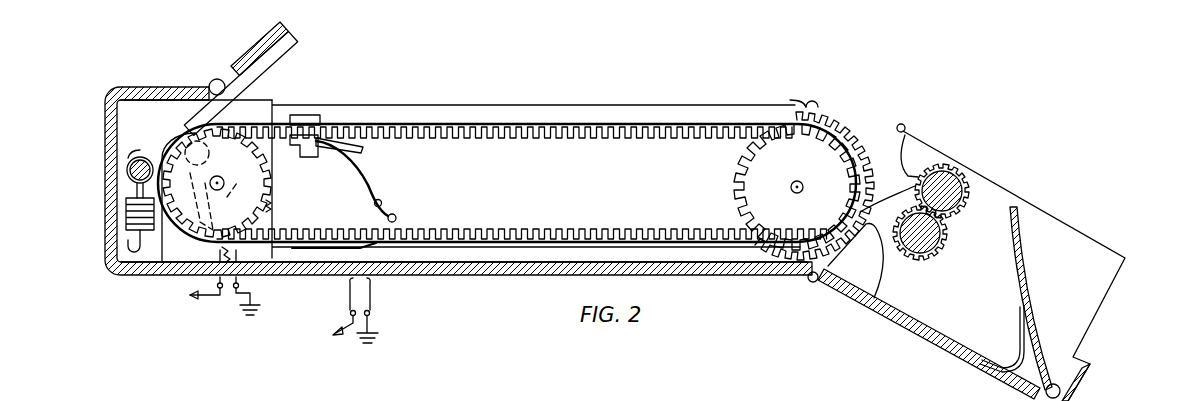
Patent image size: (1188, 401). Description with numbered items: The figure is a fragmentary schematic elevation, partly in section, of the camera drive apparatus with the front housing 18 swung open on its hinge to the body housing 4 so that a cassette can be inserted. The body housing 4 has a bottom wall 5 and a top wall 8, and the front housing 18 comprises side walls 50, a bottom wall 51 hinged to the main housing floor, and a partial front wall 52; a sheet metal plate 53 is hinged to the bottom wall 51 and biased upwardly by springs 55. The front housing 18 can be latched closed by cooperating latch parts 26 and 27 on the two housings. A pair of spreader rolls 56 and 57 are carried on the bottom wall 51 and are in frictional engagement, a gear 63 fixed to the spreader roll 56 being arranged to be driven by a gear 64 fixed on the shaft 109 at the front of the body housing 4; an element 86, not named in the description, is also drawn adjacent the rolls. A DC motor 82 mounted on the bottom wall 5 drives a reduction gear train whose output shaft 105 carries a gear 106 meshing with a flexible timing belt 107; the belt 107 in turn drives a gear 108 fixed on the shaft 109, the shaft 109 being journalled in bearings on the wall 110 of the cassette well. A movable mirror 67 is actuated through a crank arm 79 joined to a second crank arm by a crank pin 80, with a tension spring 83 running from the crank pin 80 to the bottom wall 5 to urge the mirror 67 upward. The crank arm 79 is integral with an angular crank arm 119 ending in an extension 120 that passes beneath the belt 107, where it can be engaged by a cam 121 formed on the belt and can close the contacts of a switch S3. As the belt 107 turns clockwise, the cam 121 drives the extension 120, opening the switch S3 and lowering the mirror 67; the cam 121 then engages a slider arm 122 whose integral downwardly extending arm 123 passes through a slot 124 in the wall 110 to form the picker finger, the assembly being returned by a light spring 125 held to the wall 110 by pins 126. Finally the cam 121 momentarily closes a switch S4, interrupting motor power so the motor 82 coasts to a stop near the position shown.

The top wall 8 is at (176, 87).
The body housing 4 is at (429, 290).
The bottom wall 5 is at (509, 279).
The front housing 18 is at (931, 354).
The movable mirror 67 is at (296, 41).
The DC motor 82 is at (172, 247).
The crank arm 79 is at (130, 150).
The crank pin 80 is at (127, 172).
The tension spring 83 is at (125, 215).
The wall of cassette well 110 is at (502, 140).
The flexible timing belt 107 is at (497, 232).
The gear 106 is at (273, 199).
The latch part 26 is at (814, 102).
The output shaft 105 is at (224, 176).
The crank arm 119 is at (218, 222).
The slider arm 122 is at (313, 117).
The downwardly extending arm 123 is at (292, 153).
The slot 124 is at (360, 151).
The light spring 125 is at (376, 190).
The pins 126 is at (362, 223).
The cam 121 is at (325, 250).
The extension 120 is at (215, 250).
The switch S3 is at (266, 304).
The switch S4 is at (348, 339).
The gear 108 is at (755, 188).
The shaft 109 is at (817, 167).
The gear 64 is at (853, 144).
The arm 86 is at (868, 284).
The latch part 27 is at (905, 126).
The spreader roll 56 is at (966, 173).
The gear 63 is at (971, 208).
The spreader roll 57 is at (930, 264).
The side wall 50 is at (1093, 298).
The partial front wall 52 is at (1086, 389).
The bottom wall 51 is at (905, 329).
The plate 53 is at (1031, 288).
The springs 55 is at (998, 365).